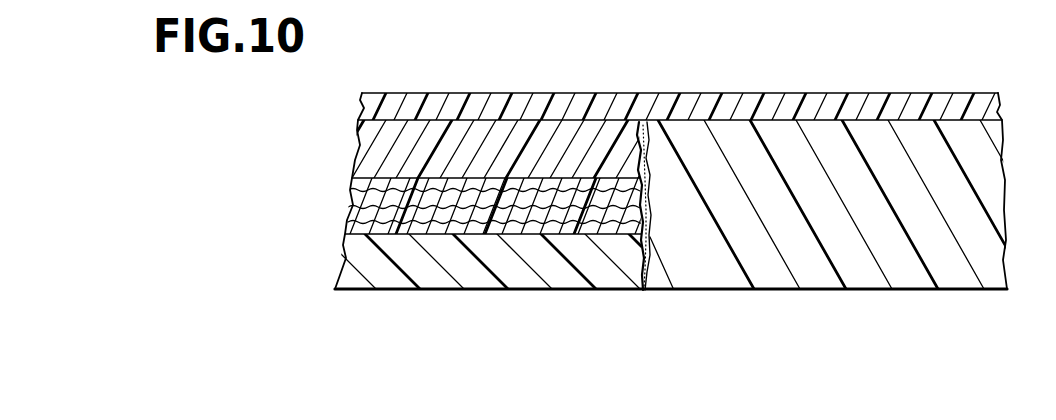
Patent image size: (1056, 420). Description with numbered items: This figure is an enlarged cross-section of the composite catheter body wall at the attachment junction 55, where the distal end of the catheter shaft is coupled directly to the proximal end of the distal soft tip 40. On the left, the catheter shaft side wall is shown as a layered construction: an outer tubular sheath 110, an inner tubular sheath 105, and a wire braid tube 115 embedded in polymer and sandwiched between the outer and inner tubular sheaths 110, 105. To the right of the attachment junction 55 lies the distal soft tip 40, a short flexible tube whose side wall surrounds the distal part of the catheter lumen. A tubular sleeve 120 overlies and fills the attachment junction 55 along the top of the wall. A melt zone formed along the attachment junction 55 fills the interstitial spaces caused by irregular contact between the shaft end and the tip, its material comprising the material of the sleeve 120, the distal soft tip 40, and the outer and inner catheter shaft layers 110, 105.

The distal soft tip 40 is at (883, 155).
The attachment junction 55 is at (643, 290).
The inner tubular sheath 105 is at (432, 272).
The outer tubular sheath 110 is at (540, 147).
The wire braid tube 115 is at (447, 212).
The tubular sleeve 120 is at (706, 96).